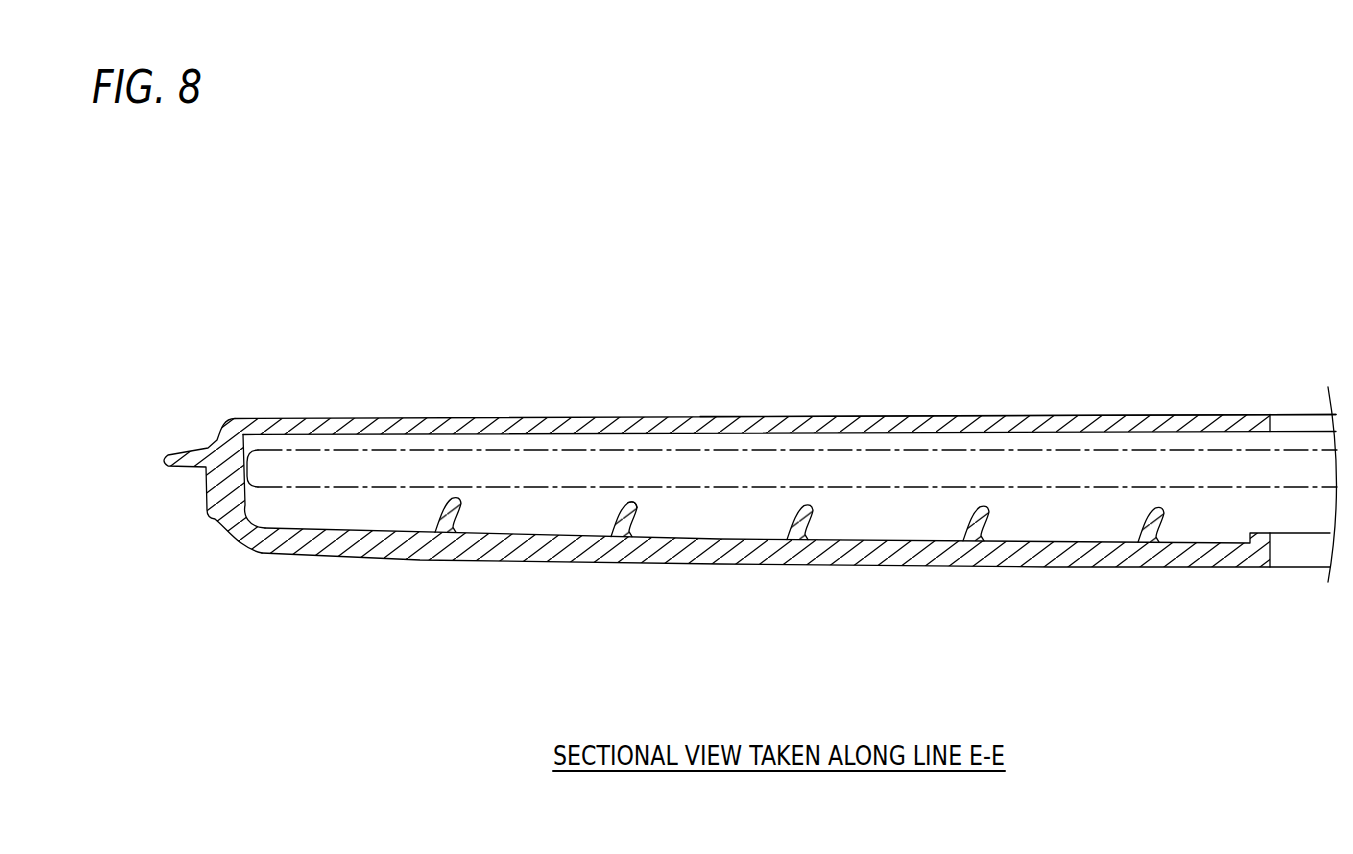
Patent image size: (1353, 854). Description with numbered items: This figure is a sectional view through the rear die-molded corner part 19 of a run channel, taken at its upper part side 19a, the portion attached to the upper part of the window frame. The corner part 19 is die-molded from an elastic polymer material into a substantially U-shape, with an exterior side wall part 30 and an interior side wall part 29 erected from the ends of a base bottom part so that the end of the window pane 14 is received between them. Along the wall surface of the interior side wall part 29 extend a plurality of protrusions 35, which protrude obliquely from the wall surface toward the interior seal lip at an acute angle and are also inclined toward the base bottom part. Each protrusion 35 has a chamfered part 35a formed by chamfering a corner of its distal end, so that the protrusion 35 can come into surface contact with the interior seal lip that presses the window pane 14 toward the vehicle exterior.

The rear die-molded corner part 19 is at (355, 412).
The upper part side of the rear die-molded corner part 19a is at (900, 415).
The exterior side wall part 30 is at (518, 413).
The interior side wall part 29 is at (528, 563).
The protrusion 35 is at (638, 521).
The chamfered part 35a is at (632, 501).
The window pane 14 is at (350, 487).